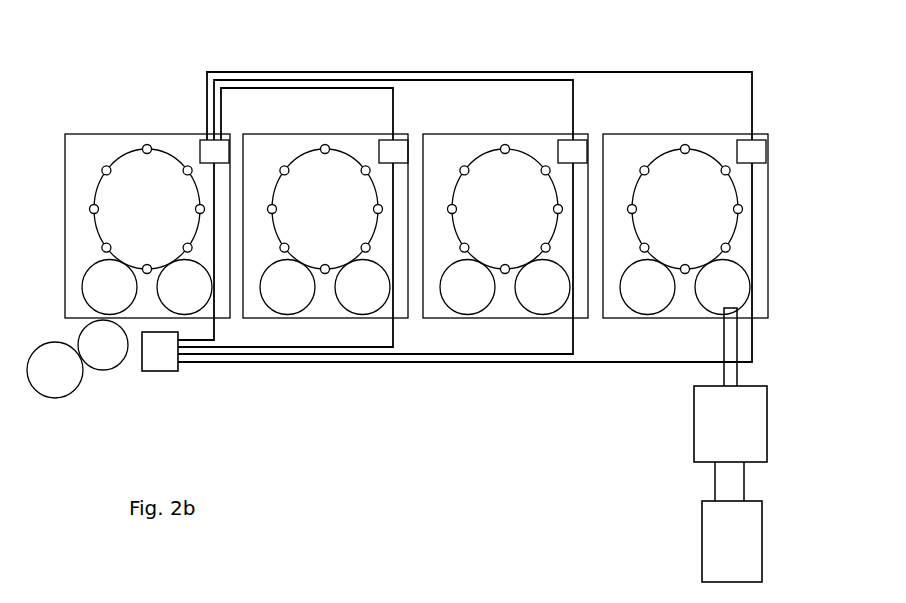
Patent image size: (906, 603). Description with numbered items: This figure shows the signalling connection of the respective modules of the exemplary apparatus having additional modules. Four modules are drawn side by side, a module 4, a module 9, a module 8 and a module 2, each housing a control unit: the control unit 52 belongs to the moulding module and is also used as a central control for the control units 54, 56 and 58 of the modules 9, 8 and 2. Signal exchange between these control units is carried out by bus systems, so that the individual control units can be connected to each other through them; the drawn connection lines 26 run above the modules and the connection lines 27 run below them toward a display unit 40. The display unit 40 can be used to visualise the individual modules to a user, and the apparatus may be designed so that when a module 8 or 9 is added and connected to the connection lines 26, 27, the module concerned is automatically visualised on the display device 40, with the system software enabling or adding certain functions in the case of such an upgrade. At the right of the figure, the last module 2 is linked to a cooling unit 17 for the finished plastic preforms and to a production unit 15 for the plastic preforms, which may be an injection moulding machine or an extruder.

The module 2 is at (716, 112).
The printing module 4 is at (123, 112).
The module 8 is at (496, 115).
The module 9 is at (315, 108).
The production unit 15 is at (732, 541).
The cooling unit 17 is at (730, 424).
The connection line 26 is at (352, 88).
The connection line 27 is at (318, 355).
The display unit 40 is at (160, 351).
The control unit 52 is at (214, 151).
The control unit 54 is at (393, 151).
The control unit 56 is at (572, 151).
The control unit 58 is at (751, 151).